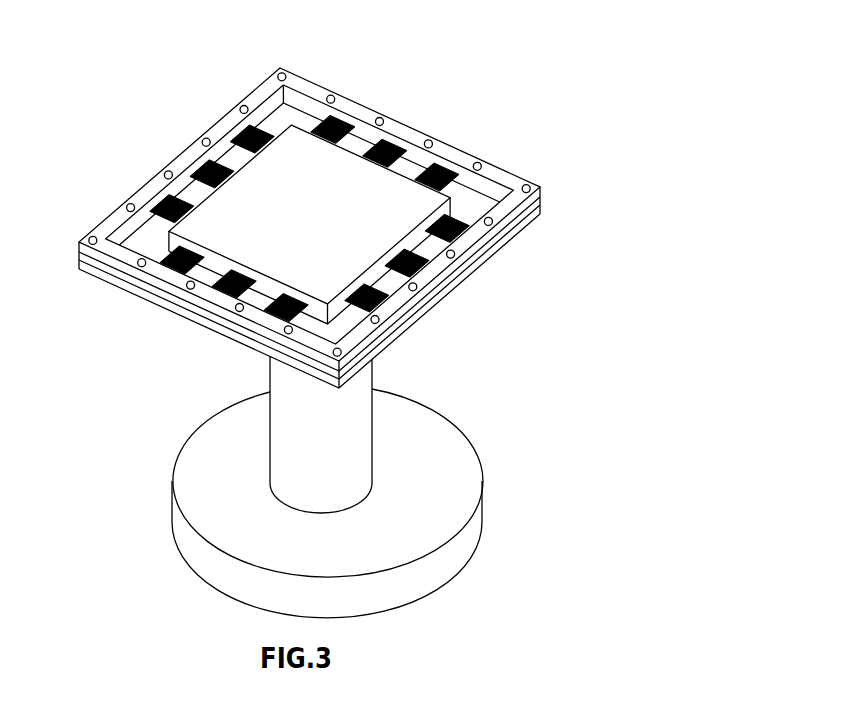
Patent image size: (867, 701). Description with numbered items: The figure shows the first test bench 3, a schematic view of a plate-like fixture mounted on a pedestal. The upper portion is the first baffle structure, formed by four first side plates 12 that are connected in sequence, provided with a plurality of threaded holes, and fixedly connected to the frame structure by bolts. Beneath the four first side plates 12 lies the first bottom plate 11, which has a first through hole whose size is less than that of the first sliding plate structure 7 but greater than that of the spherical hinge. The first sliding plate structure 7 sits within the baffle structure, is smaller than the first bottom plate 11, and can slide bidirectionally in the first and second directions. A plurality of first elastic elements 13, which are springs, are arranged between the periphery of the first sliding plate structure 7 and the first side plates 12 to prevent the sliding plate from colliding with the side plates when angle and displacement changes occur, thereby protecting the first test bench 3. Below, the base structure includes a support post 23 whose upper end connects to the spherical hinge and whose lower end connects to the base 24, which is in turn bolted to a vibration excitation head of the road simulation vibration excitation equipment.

The first test bench 3 is at (67, 52).
The first side plates 12 is at (309, 215).
The first bottom plate 11 is at (284, 214).
The first sliding plate structure 7 is at (309, 169).
The first elastic elements 13 is at (310, 168).
The support post 23 is at (260, 422).
The base 24 is at (290, 503).